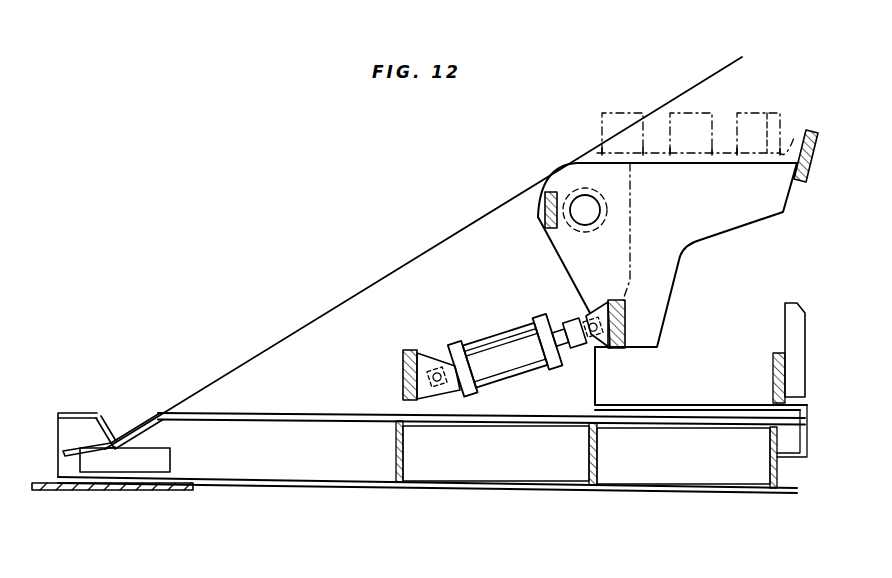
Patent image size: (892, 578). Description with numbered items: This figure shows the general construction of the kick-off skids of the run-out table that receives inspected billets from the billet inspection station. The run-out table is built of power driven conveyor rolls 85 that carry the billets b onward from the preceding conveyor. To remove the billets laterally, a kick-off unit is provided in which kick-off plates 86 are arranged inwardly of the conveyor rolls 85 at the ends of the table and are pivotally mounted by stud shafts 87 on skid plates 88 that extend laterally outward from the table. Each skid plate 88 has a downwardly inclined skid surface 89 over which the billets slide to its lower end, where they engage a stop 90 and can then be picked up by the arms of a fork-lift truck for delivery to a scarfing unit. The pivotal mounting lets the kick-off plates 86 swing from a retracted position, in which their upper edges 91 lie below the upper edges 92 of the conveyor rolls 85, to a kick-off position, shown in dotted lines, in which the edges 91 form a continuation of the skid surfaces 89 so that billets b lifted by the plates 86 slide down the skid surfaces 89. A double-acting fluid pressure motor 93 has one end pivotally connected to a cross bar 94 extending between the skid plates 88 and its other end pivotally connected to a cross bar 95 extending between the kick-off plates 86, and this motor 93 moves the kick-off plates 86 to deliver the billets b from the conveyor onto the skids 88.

The conveyor rolls 85 is at (796, 145).
The kick-off plates 86 is at (673, 271).
The stud shafts 87 is at (580, 203).
The skid plates 88 is at (388, 295).
The skid surfaces 89 is at (298, 327).
The stop 90 is at (106, 422).
The upper edges 91 is at (710, 74).
The upper edges 92 is at (767, 153).
The double-acting fluid pressure motor 93 is at (487, 333).
The cross bar 94 is at (412, 352).
The cross bar 95 is at (625, 316).
The billets b is at (610, 112).